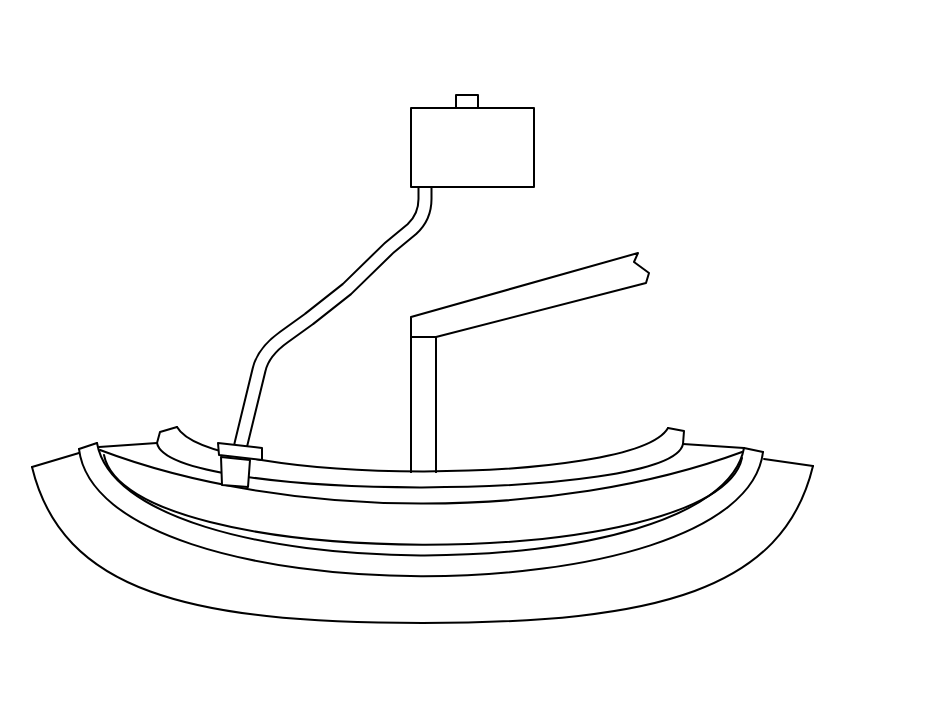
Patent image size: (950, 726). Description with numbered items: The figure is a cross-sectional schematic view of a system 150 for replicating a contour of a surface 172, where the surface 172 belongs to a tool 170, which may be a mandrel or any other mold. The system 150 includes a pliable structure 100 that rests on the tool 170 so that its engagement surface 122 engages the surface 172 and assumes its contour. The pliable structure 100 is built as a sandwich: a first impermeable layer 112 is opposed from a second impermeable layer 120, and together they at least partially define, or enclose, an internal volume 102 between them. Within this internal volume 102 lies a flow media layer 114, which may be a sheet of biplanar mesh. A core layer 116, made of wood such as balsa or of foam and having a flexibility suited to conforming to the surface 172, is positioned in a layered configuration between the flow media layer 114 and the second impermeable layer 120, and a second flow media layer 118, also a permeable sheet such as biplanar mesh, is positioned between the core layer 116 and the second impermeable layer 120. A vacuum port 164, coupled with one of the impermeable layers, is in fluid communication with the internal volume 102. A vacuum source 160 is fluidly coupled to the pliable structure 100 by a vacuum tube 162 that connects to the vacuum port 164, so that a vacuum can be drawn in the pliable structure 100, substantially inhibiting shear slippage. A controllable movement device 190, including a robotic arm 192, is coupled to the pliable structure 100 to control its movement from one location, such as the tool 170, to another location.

The pliable structure 100 is at (588, 390).
The internal volume 102 is at (108, 407).
The first impermeable layer 112 is at (673, 428).
The flow media layer 114 is at (690, 443).
The core layer 116 is at (716, 447).
The second flow media layer 118 is at (745, 447).
The second impermeable layer 120 is at (764, 450).
The engagement surface 122 is at (79, 453).
The system 150 is at (363, 113).
The vacuum source 160 is at (534, 144).
The vacuum tube 162 is at (402, 253).
The vacuum port 164 is at (275, 452).
The tool 170 is at (763, 552).
The surface 172 is at (763, 470).
The controllable movement device 190 is at (587, 267).
The robotic arm 192 is at (515, 317).